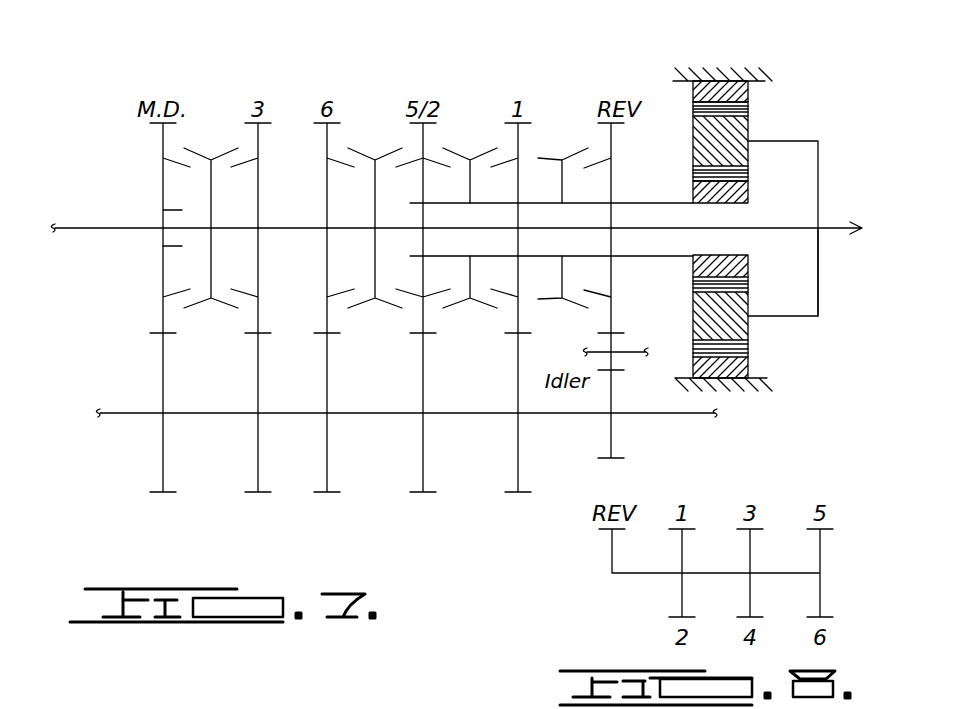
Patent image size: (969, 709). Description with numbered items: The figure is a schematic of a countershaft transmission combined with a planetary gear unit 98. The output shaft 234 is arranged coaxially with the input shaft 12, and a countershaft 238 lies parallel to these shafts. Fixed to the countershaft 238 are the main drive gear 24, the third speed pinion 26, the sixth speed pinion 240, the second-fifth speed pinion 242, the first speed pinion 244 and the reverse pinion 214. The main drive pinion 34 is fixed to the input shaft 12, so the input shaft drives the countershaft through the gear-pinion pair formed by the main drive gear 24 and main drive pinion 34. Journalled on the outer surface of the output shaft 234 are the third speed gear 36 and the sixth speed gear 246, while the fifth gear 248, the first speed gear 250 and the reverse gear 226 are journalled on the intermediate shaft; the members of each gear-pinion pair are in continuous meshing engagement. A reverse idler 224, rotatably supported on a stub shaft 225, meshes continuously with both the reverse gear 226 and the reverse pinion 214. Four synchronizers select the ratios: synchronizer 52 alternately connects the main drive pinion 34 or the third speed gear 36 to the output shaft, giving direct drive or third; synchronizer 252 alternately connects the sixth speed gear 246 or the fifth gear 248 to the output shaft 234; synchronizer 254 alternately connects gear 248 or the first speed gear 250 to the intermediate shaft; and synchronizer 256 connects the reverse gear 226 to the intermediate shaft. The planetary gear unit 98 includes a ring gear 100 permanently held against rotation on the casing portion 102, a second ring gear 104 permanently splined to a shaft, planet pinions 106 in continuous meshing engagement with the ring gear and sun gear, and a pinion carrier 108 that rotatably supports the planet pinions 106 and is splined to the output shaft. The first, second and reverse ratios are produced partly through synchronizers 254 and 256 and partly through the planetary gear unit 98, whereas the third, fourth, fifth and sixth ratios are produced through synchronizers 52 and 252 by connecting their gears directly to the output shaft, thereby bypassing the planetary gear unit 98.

The input shaft 12 is at (92, 228).
The main drive pinion 34 is at (163, 140).
The third speed gear 36 is at (258, 212).
The sixth speed gear 246 is at (327, 130).
The fifth gear 248 is at (423, 131).
The first speed gear 250 is at (518, 131).
The reverse gear 226 is at (611, 133).
The synchronizer 52 is at (214, 318).
The synchronizer 252 is at (379, 318).
The synchronizer 254 is at (474, 318).
The synchronizer 256 is at (565, 318).
The main drive gear 24 is at (163, 458).
The third speed pinion 26 is at (258, 458).
The sixth speed pinion 240 is at (327, 456).
The second-fifth speed pinion 242 is at (424, 480).
The first speed pinion 244 is at (518, 460).
The reverse pinion 214 is at (612, 436).
The stub shaft 225 is at (642, 348).
The reverse idler 224 is at (614, 364).
The countershaft 238 is at (370, 415).
The casing portion 102 is at (718, 75).
The planetary gear unit 98 is at (734, 220).
The ring gear 100 is at (728, 96).
The planet pinions 106 is at (725, 138).
The ring gear 104 is at (728, 194).
The pinion carrier 108 is at (820, 214).
The output shaft 234 is at (822, 234).